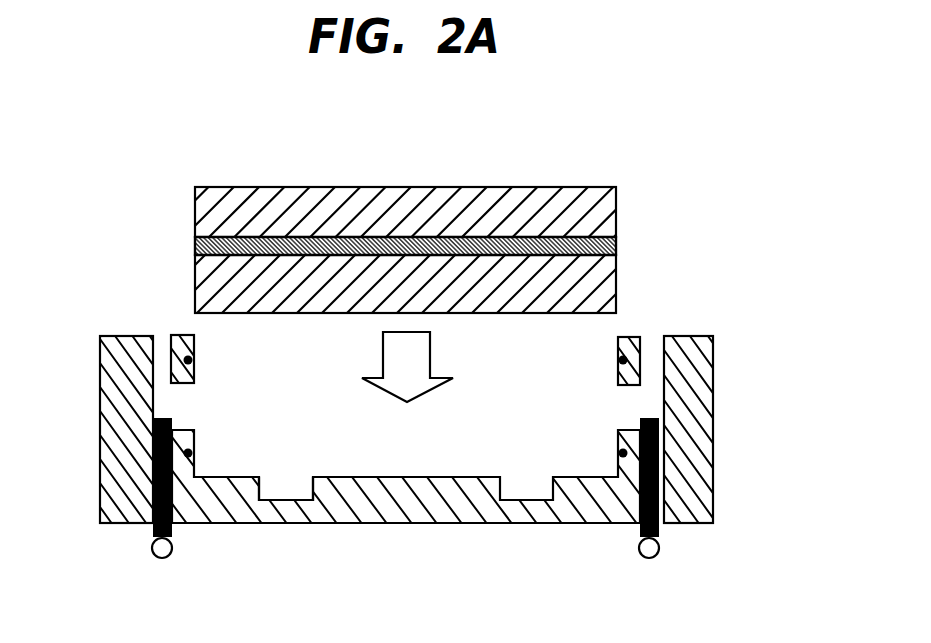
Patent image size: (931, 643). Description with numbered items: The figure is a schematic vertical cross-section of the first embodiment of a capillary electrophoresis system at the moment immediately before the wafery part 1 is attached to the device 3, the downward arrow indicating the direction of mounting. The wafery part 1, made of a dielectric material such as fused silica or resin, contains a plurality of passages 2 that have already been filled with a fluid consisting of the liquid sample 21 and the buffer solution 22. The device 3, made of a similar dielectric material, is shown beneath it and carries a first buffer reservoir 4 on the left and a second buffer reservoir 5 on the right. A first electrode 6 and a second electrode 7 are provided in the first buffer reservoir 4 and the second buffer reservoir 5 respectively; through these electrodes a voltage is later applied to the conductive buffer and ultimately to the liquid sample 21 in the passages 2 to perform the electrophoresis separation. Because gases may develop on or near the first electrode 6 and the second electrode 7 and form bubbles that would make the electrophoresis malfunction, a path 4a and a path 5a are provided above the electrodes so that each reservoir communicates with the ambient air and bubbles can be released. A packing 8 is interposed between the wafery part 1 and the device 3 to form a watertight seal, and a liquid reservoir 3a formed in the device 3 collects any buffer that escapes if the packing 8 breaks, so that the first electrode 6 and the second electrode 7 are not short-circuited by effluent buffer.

The wafery part 1 is at (283, 187).
The passages 2 is at (527, 238).
The liquid sample 21 is at (195, 245).
The buffer solution 22 is at (398, 238).
The device 3 is at (407, 521).
The liquid reservoir 3a is at (286, 485).
The first buffer reservoir 4 is at (177, 400).
The second buffer reservoir 5 is at (640, 403).
The path 4a is at (160, 338).
The path 5a is at (650, 340).
The first electrode 6 is at (172, 534).
The second electrode 7 is at (659, 534).
The packing 8 is at (188, 453).